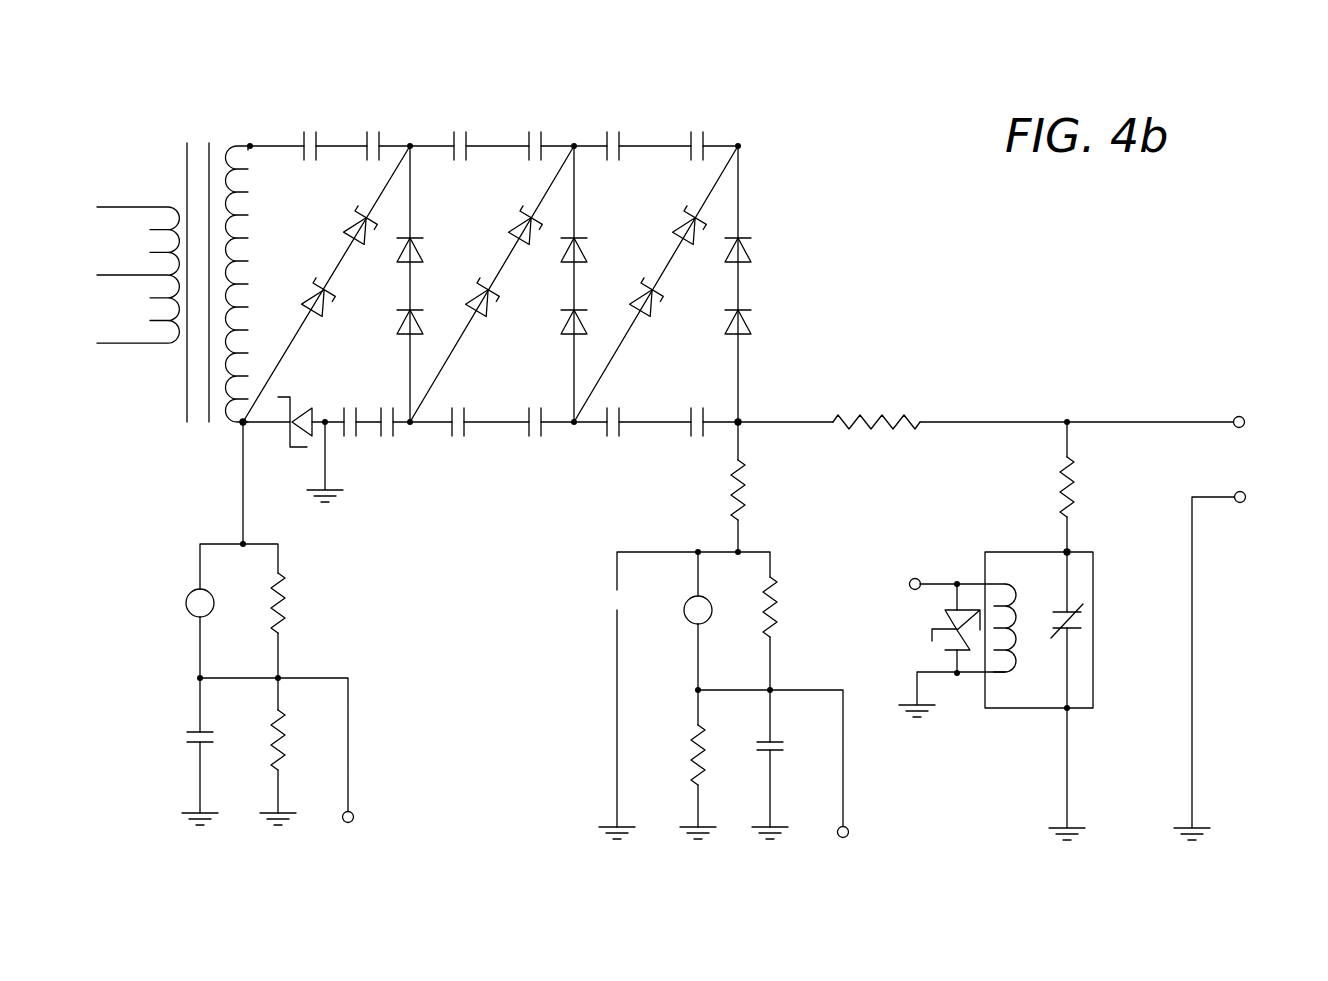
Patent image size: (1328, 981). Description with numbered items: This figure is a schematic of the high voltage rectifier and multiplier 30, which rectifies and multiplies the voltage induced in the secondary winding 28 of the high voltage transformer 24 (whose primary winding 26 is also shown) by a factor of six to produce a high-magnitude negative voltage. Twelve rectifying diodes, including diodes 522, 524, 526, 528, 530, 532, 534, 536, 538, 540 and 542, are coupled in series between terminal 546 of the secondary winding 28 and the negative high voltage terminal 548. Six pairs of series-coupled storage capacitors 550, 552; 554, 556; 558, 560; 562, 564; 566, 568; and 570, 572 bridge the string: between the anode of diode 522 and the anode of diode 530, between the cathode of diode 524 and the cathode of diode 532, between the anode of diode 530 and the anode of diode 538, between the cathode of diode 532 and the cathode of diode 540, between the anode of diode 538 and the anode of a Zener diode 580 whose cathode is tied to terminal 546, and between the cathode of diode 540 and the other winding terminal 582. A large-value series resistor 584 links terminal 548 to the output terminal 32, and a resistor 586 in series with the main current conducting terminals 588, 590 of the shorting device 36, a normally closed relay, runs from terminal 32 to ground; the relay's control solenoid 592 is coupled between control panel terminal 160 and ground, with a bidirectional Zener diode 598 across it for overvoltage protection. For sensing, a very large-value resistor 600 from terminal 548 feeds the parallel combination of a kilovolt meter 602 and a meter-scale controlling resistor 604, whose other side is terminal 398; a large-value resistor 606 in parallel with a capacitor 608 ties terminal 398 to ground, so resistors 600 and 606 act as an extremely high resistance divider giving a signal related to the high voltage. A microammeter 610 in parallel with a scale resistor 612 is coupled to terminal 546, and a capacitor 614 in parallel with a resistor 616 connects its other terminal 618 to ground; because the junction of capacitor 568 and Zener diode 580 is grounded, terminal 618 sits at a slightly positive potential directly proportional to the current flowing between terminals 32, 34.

The high voltage transformer 24 is at (205, 128).
The primary winding 26 is at (129, 242).
The secondary winding 28 is at (302, 224).
The high voltage rectifier and multiplier 30 is at (489, 52).
The output terminal 32 is at (1244, 427).
The terminal 34 is at (1245, 493).
The shorting device 36 is at (1130, 598).
The terminal 160 is at (918, 578).
The terminal 398 is at (845, 840).
The high voltage rectifying diode 522 is at (749, 320).
The high voltage rectifying diode 524 is at (748, 246).
The high voltage rectifying diode 526 is at (680, 226).
The high voltage rectifying diode 528 is at (636, 300).
The high voltage rectifying diode 530 is at (568, 322).
The high voltage rectifying diode 532 is at (568, 250).
The high voltage rectifying diode 534 is at (514, 226).
The high voltage rectifying diode 536 is at (471, 300).
The high voltage rectifying diode 538 is at (404, 320).
The high voltage rectifying diode 540 is at (404, 250).
The high voltage rectifying diode 542 is at (348, 222).
The terminal 546 is at (240, 425).
The negative high voltage terminal 548 is at (741, 418).
The storage capacitor 550 is at (697, 440).
The storage capacitor 552 is at (613, 440).
The storage capacitor 554 is at (697, 128).
The storage capacitor 556 is at (614, 128).
The storage capacitor 558 is at (535, 440).
The storage capacitor 560 is at (458, 440).
The storage capacitor 562 is at (536, 128).
The storage capacitor 564 is at (459, 128).
The storage capacitor 566 is at (386, 438).
The storage capacitor 568 is at (350, 440).
The storage capacitor 570 is at (380, 105).
The storage capacitor 572 is at (314, 126).
The Zener diode 580 is at (289, 433).
The terminal 582 is at (253, 143).
The series resistor 584 is at (878, 428).
The resistor 586 is at (1060, 472).
The main current conducting terminal 588 is at (1068, 549).
The main current conducting terminal 590 is at (1069, 712).
The control solenoid 592 is at (1012, 670).
The bidirectional Zener diode 598 is at (940, 626).
The resistor 600 is at (745, 500).
The kilovolt meter 602 is at (688, 620).
The meter-scale controlling resistor 604 is at (778, 632).
The resistor 606 is at (694, 745).
The capacitor 608 is at (760, 744).
The microammeter 610 is at (186, 604).
The scale resistor 612 is at (283, 606).
The capacitor 614 is at (186, 736).
The resistor 616 is at (274, 740).
The terminal 618 is at (352, 812).